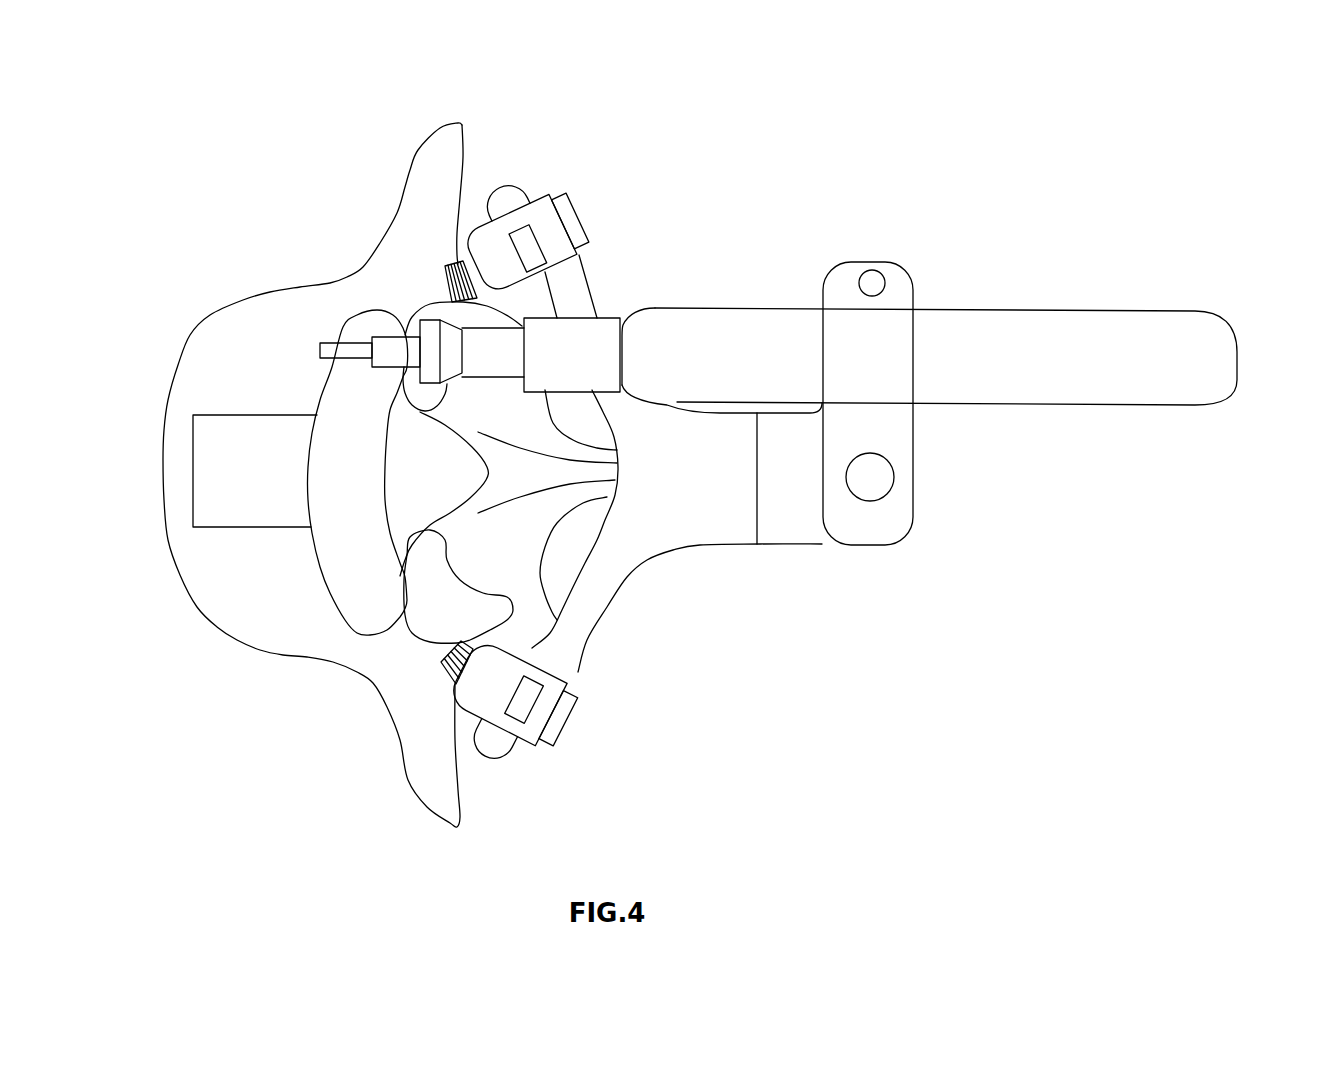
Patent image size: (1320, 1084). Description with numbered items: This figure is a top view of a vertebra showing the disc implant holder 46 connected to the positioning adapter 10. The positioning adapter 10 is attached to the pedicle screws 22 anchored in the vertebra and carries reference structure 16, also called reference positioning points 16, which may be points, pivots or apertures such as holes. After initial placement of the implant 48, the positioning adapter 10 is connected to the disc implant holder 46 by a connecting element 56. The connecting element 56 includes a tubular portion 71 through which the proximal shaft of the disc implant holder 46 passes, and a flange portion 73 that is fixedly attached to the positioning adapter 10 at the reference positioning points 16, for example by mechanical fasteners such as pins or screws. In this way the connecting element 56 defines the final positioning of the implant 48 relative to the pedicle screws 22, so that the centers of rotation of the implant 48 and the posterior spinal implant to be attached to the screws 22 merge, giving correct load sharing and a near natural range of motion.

The positioning adapter 10 is at (680, 210).
The reference structure 16 is at (877, 485).
The pedicle screws 22 is at (463, 237).
The disc implant holder 46 is at (997, 313).
The implant 48 is at (368, 308).
The connecting element 56 is at (843, 542).
The tubular portion 71 is at (873, 360).
The flange portion 73 is at (797, 492).